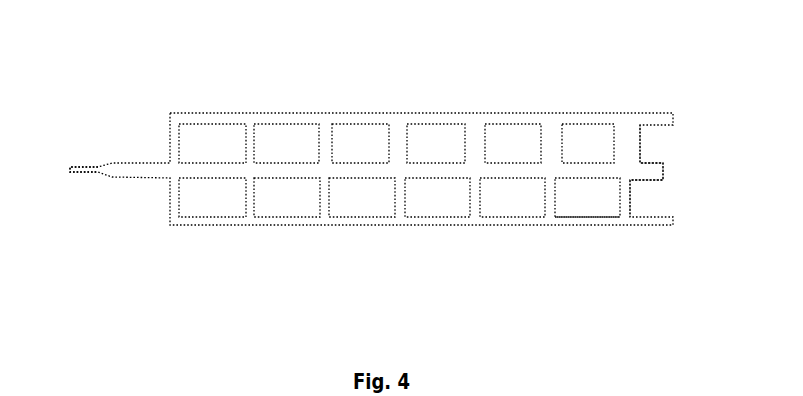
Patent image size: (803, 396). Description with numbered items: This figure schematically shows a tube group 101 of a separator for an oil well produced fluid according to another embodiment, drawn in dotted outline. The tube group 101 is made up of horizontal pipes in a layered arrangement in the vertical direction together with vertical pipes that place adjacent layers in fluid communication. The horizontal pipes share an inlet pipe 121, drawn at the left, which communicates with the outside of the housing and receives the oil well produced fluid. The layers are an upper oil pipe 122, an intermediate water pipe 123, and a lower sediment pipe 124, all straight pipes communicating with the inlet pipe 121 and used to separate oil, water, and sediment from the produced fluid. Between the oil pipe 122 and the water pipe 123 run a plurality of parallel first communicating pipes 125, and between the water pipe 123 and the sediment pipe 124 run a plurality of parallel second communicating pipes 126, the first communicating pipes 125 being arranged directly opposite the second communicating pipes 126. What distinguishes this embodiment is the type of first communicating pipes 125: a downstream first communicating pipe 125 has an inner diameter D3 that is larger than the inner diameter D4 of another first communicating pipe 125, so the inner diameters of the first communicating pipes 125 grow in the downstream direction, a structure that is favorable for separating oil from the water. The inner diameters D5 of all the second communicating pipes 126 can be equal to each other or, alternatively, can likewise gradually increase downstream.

The tube group 101 is at (381, 151).
The inlet pipe 121 is at (97, 172).
The oil pipe 122 is at (601, 113).
The water pipe 123 is at (635, 172).
The sediment pipe 124 is at (573, 220).
The first communicating pipes 125 is at (243, 152).
The second communicating pipes 126 is at (243, 196).
The inner diameter D3 is at (562, 144).
The inner diameter D4 is at (485, 144).
The inner diameters D5 is at (395, 192).